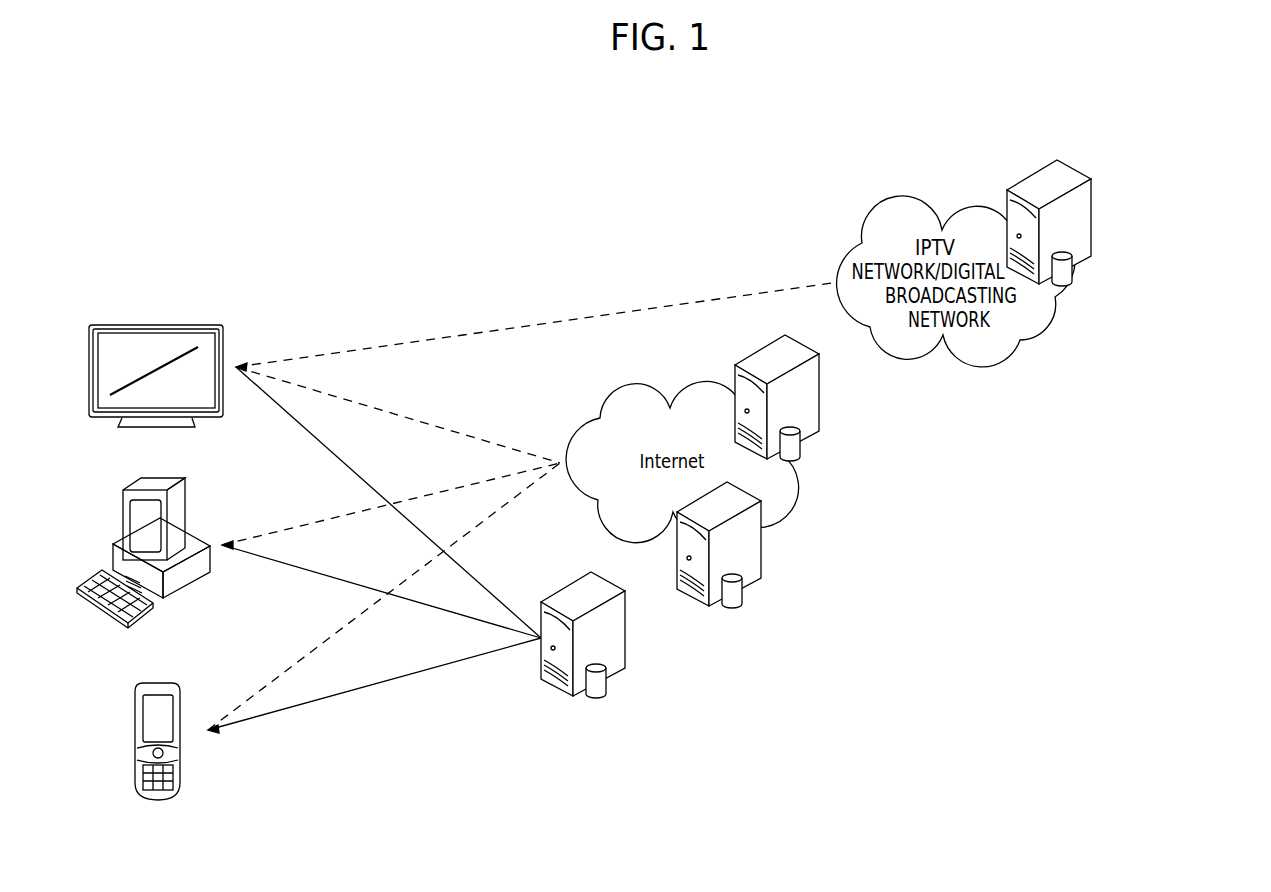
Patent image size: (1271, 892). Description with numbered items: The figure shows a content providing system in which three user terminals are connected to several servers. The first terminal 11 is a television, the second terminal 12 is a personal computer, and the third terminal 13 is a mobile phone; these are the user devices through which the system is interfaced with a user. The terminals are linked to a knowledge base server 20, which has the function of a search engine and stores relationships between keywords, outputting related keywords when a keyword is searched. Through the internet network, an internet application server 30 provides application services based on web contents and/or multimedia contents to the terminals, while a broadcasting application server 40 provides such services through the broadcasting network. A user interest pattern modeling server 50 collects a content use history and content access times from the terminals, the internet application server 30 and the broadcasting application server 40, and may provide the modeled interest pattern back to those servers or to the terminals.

The first terminal 11 is at (197, 325).
The second terminal 12 is at (188, 502).
The third terminal 13 is at (183, 685).
The knowledge base server 20 is at (623, 648).
The internet application server 30 is at (762, 553).
The broadcasting application server 40 is at (822, 412).
The user interest pattern modeling server 50 is at (1092, 238).